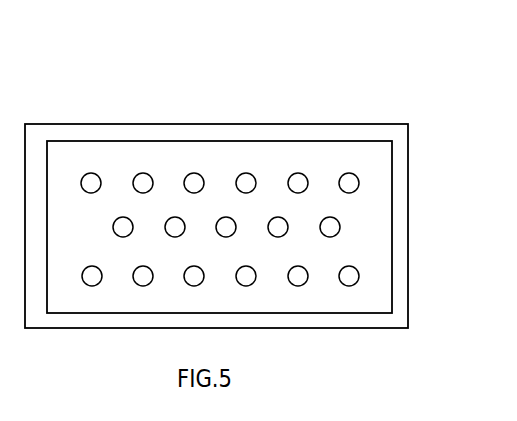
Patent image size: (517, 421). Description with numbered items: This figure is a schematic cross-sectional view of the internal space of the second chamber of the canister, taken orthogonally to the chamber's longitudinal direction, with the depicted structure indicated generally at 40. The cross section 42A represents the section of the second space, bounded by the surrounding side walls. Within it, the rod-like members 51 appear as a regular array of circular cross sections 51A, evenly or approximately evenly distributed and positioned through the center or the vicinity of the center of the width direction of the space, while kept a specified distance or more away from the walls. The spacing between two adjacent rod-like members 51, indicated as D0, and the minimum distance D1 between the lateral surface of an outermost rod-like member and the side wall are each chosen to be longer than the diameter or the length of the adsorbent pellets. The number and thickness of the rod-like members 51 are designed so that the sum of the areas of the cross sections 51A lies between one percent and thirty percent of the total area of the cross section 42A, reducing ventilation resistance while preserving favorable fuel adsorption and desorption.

The light emitting unit 40 is at (354, 97).
The cross section of the second space 42A is at (317, 283).
The rod-like member 51 is at (360, 173).
The cross section of the rod-like members 51A is at (246, 181).
The distance between two adjacent rod-like members D0 is at (116, 237).
The minimum distance between a rod-like member lateral surface and the side wall D1 is at (91, 142).